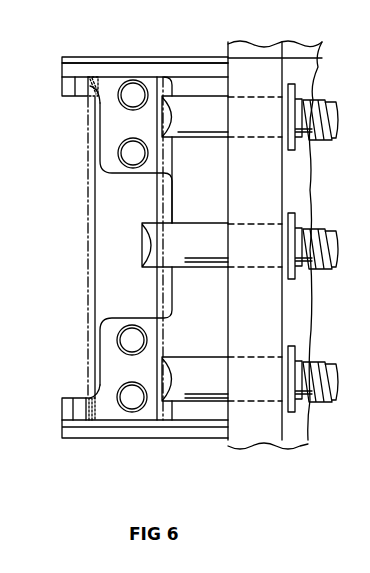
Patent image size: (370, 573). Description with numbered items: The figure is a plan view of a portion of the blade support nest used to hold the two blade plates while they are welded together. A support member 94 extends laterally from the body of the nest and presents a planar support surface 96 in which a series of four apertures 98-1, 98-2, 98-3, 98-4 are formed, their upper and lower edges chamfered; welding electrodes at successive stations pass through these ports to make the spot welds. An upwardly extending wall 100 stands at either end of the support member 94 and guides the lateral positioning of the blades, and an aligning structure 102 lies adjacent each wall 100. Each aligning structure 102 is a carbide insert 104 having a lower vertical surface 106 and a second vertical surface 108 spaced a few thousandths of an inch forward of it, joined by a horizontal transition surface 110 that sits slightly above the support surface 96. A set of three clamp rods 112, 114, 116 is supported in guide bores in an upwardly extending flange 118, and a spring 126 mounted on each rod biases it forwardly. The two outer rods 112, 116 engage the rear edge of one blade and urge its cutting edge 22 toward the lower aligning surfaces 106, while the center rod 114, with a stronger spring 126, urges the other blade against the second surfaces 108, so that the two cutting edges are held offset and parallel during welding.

The cutting edge 22 is at (88, 291).
The support member 94 is at (202, 438).
The planar support surface 96 is at (105, 337).
The aperture 98-1 is at (123, 386).
The aperture 98-2 is at (124, 328).
The aperture 98-3 is at (124, 166).
The aperture 98-4 is at (126, 105).
The upwardly extending wall 100 is at (143, 69).
The aligning structure 102 is at (57, 84).
The carbide insert 104 is at (80, 82).
The lower vertical surface 106 is at (98, 96).
The second vertical surface 108 is at (98, 82).
The horizontal transition surface 110 is at (97, 97).
The clamp rod 112 is at (209, 383).
The clamp rod 114 is at (204, 253).
The clamp rod 116 is at (211, 125).
The upwardly extending flange 118 is at (257, 428).
The spring 126 is at (328, 404).